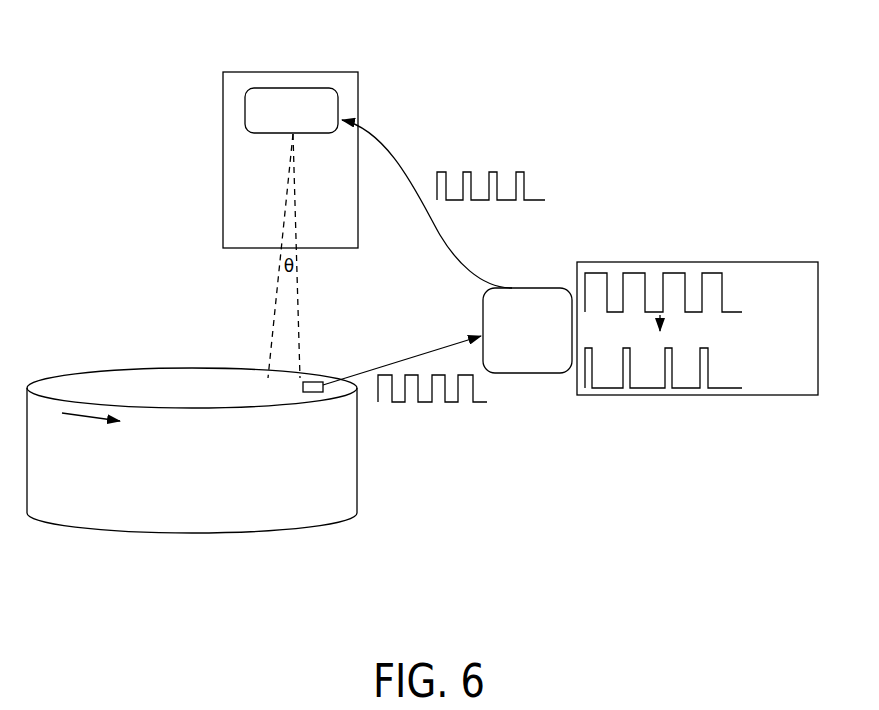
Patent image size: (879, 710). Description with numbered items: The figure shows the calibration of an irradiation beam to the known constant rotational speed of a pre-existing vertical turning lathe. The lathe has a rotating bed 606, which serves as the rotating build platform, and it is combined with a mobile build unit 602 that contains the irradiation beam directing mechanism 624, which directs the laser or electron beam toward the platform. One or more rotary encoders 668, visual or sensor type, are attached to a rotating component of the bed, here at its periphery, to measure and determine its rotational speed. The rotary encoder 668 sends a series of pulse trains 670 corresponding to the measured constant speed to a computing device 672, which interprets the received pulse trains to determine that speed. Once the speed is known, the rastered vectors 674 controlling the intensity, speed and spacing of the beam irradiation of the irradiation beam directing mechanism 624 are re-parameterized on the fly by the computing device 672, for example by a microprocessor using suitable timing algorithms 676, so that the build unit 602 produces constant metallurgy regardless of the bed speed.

The mobile build unit 602 is at (330, 80).
The irradiation beam directing mechanism 624 is at (273, 100).
The rotating bed 606 is at (167, 505).
The rotary encoder 668 is at (312, 378).
The pulse trains 670 is at (423, 420).
The computing device 672 is at (540, 362).
The rastered vectors 674 is at (483, 158).
The timing algorithms 676 is at (757, 262).